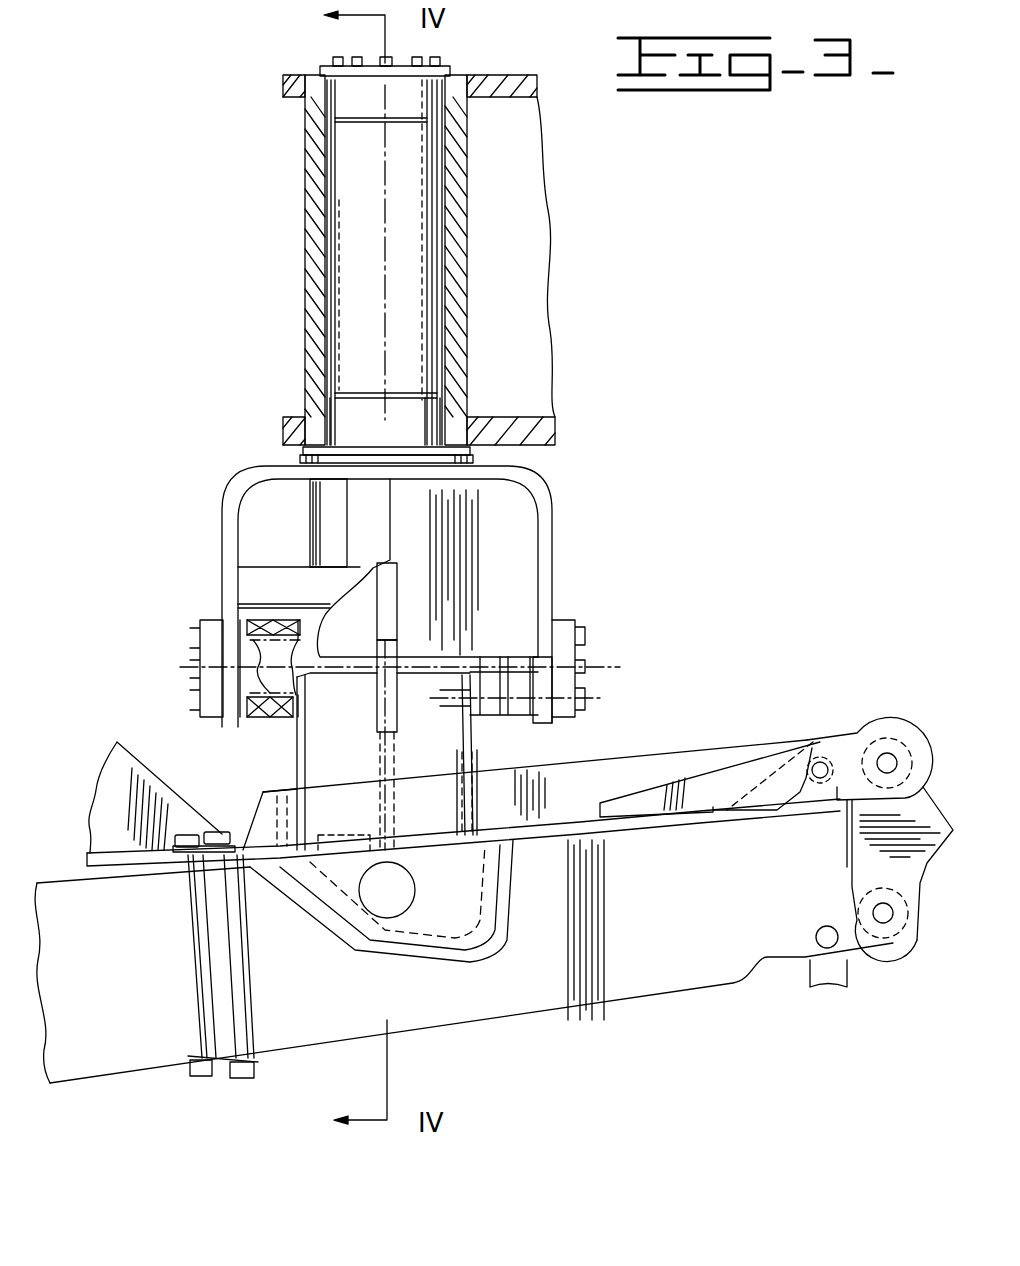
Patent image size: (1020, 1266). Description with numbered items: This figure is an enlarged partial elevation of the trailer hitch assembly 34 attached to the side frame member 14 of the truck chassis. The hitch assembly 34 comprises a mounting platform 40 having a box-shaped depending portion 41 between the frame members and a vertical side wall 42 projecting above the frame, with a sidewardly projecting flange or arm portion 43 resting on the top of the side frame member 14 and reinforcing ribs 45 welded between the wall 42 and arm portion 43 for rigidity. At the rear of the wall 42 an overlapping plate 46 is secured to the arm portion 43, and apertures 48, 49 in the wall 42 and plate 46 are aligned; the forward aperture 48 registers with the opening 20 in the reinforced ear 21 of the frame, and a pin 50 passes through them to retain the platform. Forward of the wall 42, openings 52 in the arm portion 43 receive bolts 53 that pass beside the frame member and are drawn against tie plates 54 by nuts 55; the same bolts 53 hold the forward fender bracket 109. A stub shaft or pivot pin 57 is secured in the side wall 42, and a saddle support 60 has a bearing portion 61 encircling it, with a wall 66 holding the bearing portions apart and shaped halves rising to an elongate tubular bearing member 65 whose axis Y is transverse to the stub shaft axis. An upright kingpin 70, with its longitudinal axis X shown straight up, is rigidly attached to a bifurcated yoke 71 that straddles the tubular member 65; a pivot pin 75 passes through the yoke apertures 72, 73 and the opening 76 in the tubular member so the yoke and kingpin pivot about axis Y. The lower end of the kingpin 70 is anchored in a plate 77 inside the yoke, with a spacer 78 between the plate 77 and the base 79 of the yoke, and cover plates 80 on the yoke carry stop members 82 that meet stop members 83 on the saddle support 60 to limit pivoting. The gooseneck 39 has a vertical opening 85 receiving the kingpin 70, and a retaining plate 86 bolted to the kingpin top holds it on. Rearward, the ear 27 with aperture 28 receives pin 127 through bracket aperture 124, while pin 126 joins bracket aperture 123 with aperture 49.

The side frame member 14 is at (727, 953).
The opening 20 is at (833, 775).
The reinforced ear 21 is at (798, 810).
The reinforced ear 27 is at (853, 953).
The aperture 28 is at (885, 927).
The hitch assembly 34 is at (551, 507).
The gooseneck 39 is at (520, 82).
The mounting platform 40 is at (380, 960).
The box-shaped depending portion 41 is at (490, 957).
The vertical side wall 42 is at (560, 783).
The flange or arm portion 43 is at (613, 823).
The reinforcing rib 45 is at (297, 798).
The overlapping plate 46 is at (740, 775).
The aperture 48 is at (820, 762).
The aperture 49 is at (892, 763).
The pin 50 is at (847, 740).
The opening 52 is at (187, 877).
The bolt 53 is at (230, 1015).
The tie plate 54 is at (192, 1080).
The nut 55 is at (238, 1085).
The stub shaft or pivot pin 57 is at (397, 900).
The saddle support 60 is at (343, 717).
The bearing portion 61 is at (440, 873).
The tubular bearing member 65 is at (258, 615).
The wall 66 is at (345, 836).
The kingpin 70 is at (357, 337).
The bifurcated yoke 71 is at (552, 596).
The aperture 72 is at (190, 633).
The aperture 73 is at (577, 685).
The pivot pin 75 is at (260, 673).
The opening 76 is at (243, 707).
The plate 77 is at (252, 583).
The spacer 78 is at (343, 517).
The base 79 is at (277, 468).
The cover plate 80 is at (435, 518).
The stop member 82 is at (390, 600).
The stop member 83 is at (393, 678).
The vertical opening 85 is at (327, 283).
The retaining plate 86 is at (445, 68).
The forward bracket 109 is at (187, 820).
The aperture 123 is at (905, 788).
The aperture 124 is at (897, 942).
The pin 126 is at (895, 766).
The pin 127 is at (890, 916).
The longitudinal axis of kingpin X is at (385, 157).
The longitudinal axis of pivot pin Y is at (260, 650).